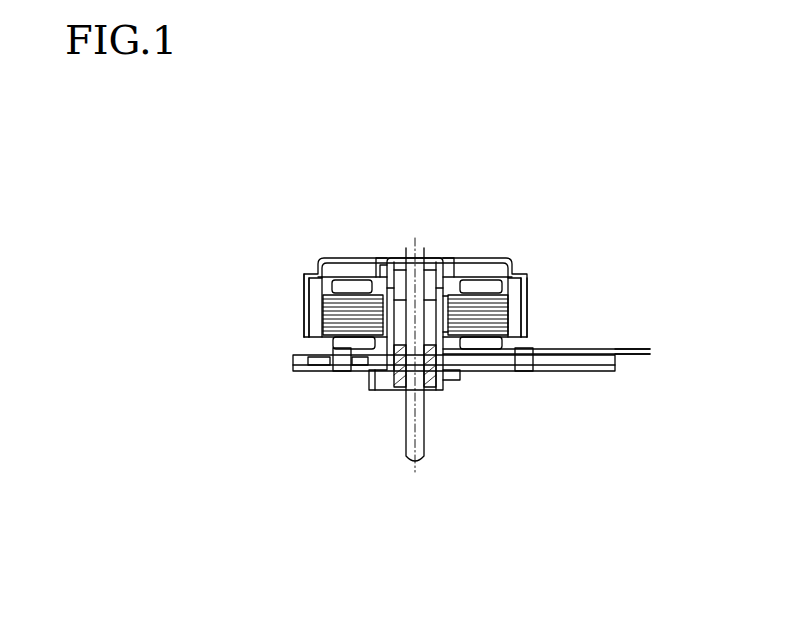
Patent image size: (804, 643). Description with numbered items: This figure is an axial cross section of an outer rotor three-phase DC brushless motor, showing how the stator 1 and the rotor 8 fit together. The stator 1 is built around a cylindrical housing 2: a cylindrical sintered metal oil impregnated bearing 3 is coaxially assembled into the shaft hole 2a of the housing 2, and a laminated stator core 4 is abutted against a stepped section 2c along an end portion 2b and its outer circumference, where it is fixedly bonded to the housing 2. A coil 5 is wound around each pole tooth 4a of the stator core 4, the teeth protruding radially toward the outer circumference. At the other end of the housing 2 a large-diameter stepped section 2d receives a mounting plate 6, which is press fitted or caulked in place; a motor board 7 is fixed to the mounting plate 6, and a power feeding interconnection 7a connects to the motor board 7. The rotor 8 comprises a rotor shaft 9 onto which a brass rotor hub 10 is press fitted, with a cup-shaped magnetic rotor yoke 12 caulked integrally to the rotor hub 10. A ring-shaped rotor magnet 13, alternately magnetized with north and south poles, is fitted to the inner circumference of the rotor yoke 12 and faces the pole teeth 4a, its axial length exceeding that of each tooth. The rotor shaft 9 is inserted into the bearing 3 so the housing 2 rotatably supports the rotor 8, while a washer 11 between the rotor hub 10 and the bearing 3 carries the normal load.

The stator 1 is at (510, 279).
The housing 2 is at (452, 378).
The shaft hole 2a is at (444, 270).
The end portion 2b is at (392, 290).
The stepped section 2c is at (452, 293).
The large-diameter stepped section 2d is at (462, 372).
The metal oil impregnated bearing 3 is at (398, 382).
The stator core 4 is at (338, 303).
The pole tooth 4a is at (507, 302).
The coil 5 is at (501, 284).
The mounting plate 6 is at (598, 368).
The motor board 7 is at (560, 351).
The power feeding interconnection 7a is at (614, 349).
The rotor 8 is at (314, 268).
The rotor shaft 9 is at (425, 447).
The rotor hub 10 is at (440, 272).
The washer 11 is at (384, 288).
The rotor yoke 12 is at (396, 285).
The rotor magnet 13 is at (314, 303).